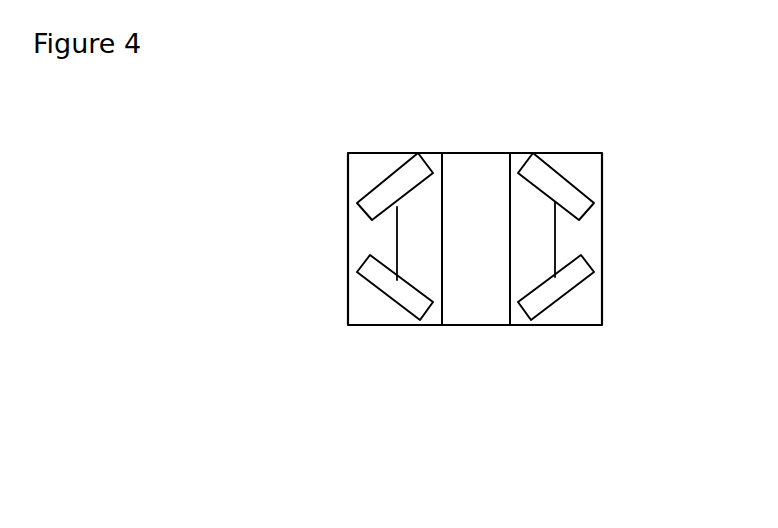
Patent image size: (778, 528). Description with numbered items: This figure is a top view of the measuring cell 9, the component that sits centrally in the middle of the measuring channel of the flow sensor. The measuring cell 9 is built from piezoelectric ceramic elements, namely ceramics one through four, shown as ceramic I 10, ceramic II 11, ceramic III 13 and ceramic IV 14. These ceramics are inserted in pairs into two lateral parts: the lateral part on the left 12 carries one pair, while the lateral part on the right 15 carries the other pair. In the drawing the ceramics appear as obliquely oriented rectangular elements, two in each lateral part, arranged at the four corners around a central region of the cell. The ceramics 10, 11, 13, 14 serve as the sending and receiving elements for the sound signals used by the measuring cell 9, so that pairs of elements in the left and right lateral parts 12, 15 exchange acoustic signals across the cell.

The measuring cell 9 is at (437, 382).
The ceramic I (piezoelectric element) 10 is at (560, 188).
The ceramic II (piezoelectric element) 11 is at (393, 190).
The lateral part on the left 12 is at (367, 233).
The ceramic III (piezoelectric element) 13 is at (390, 283).
The ceramic IV (piezoelectric element) 14 is at (560, 292).
The lateral part on the right 15 is at (588, 235).